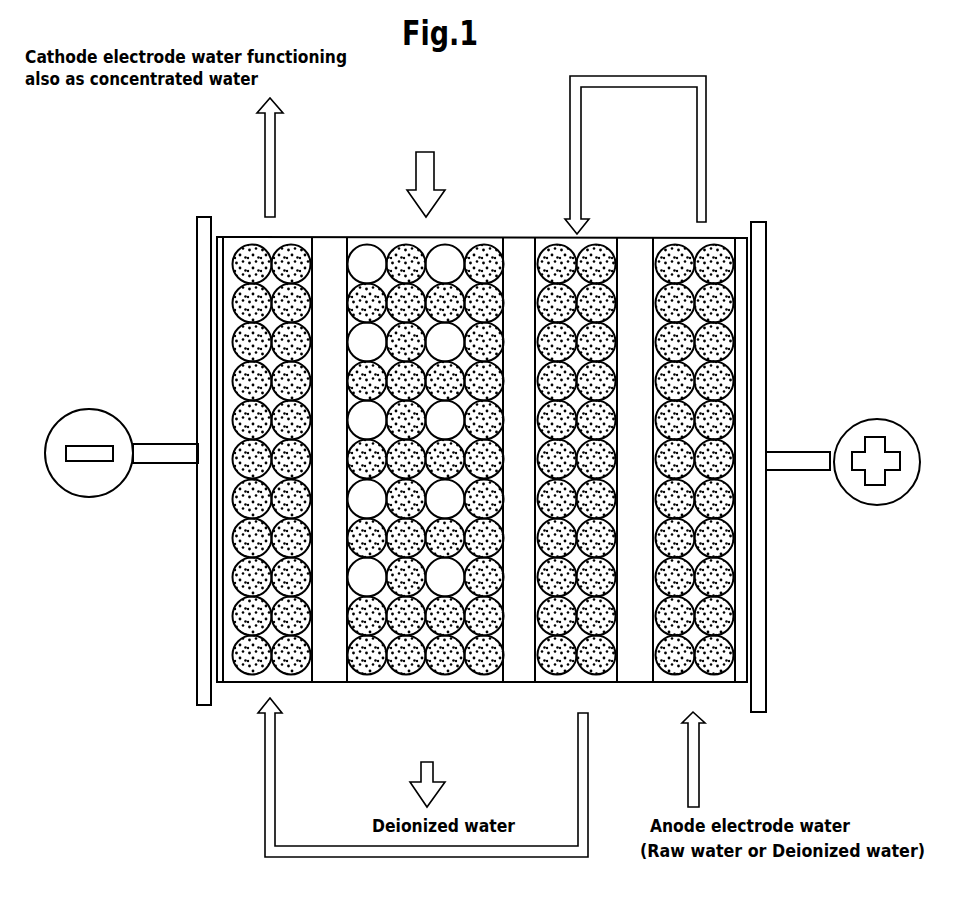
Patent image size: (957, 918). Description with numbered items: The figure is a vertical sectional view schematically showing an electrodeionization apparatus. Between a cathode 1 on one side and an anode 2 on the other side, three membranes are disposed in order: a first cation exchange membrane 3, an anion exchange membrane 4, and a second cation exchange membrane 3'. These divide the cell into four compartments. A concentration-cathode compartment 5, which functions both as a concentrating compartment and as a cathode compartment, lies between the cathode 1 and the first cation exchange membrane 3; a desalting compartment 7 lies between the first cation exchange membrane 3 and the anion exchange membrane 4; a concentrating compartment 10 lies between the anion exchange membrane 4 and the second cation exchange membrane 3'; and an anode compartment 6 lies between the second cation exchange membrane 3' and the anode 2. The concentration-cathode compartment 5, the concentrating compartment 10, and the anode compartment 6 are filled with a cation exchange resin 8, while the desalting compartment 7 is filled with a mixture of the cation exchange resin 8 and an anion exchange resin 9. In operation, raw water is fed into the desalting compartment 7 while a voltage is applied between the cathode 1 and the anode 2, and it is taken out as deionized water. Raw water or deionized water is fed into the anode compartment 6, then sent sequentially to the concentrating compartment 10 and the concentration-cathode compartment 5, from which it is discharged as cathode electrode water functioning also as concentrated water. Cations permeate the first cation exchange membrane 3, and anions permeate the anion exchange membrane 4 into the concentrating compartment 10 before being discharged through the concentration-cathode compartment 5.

The cathode 1 is at (222, 228).
The anode 2 is at (741, 250).
The first cation exchange membrane 3 is at (329, 418).
The second cation exchange membrane 3' is at (635, 428).
The anion exchange membrane 4 is at (520, 262).
The concentration-cathode compartment 5 is at (251, 690).
The anode compartment 6 is at (715, 690).
The desalting compartment 7 is at (382, 690).
The cation exchange resin 8 is at (249, 245).
The anion exchange resin 9 is at (368, 255).
The concentrating compartment 10 is at (567, 683).